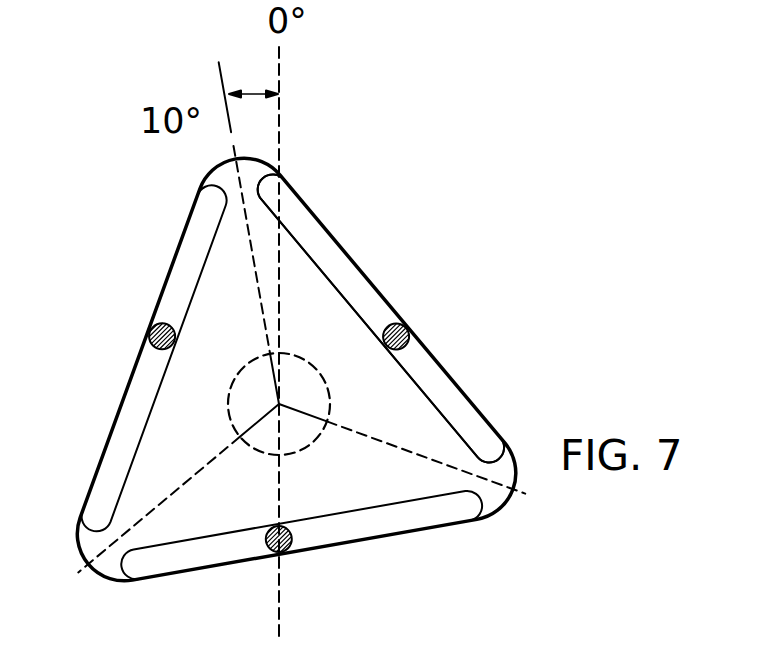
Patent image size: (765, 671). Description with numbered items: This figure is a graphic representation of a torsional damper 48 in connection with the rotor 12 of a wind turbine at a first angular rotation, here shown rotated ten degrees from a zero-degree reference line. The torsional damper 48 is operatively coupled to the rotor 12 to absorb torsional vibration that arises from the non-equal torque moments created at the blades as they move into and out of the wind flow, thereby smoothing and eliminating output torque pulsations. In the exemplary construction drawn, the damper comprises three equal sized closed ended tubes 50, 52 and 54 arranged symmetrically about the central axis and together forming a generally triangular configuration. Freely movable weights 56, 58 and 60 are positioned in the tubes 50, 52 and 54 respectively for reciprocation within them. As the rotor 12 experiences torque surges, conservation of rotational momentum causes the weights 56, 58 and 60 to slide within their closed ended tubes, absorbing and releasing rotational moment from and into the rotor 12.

The rotor 12 is at (146, 229).
The torsional damper 48 is at (406, 232).
The closed ended tube 50 is at (323, 221).
The closed ended tube 52 is at (132, 368).
The closed ended tube 54 is at (380, 536).
The freely movable weight 56 is at (410, 333).
The freely movable weight 58 is at (161, 323).
The freely movable weight 60 is at (278, 552).